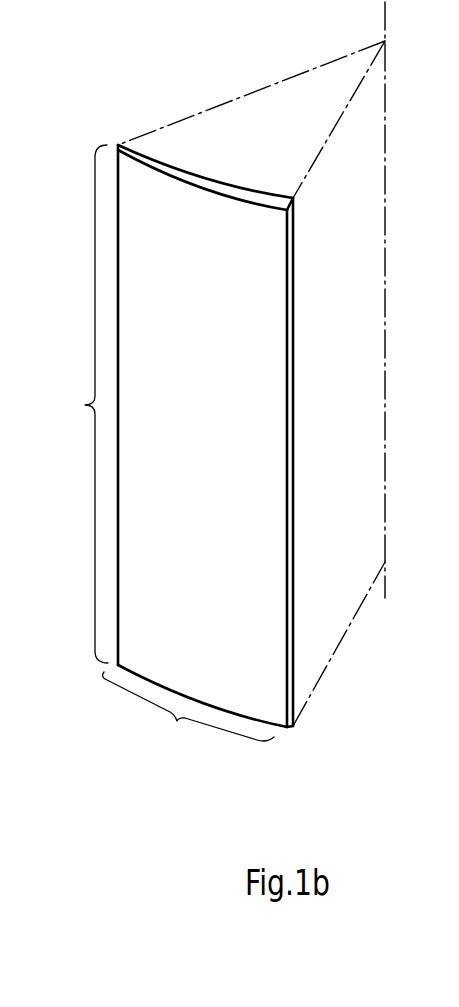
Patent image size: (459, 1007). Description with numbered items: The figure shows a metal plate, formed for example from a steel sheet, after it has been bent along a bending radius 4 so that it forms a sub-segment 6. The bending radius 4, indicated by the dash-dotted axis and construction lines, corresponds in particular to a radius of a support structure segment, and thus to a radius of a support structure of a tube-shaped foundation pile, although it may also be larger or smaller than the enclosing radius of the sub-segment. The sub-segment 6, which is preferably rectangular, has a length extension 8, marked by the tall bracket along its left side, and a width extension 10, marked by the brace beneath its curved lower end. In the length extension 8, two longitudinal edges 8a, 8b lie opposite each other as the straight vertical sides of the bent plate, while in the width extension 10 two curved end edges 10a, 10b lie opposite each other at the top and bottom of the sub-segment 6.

The bending radius 4 is at (230, 100).
The sub-segment 6 is at (198, 438).
The length extension 8 is at (88, 404).
The longitudinal edge 8a is at (290, 313).
The longitudinal edge 8b is at (117, 263).
The width extension 10 is at (188, 715).
The end edge 10a is at (158, 163).
The end edge 10b is at (228, 717).